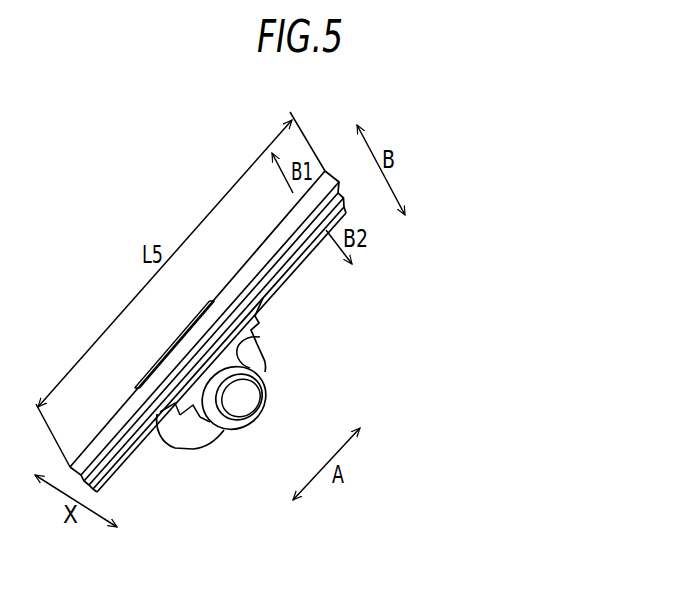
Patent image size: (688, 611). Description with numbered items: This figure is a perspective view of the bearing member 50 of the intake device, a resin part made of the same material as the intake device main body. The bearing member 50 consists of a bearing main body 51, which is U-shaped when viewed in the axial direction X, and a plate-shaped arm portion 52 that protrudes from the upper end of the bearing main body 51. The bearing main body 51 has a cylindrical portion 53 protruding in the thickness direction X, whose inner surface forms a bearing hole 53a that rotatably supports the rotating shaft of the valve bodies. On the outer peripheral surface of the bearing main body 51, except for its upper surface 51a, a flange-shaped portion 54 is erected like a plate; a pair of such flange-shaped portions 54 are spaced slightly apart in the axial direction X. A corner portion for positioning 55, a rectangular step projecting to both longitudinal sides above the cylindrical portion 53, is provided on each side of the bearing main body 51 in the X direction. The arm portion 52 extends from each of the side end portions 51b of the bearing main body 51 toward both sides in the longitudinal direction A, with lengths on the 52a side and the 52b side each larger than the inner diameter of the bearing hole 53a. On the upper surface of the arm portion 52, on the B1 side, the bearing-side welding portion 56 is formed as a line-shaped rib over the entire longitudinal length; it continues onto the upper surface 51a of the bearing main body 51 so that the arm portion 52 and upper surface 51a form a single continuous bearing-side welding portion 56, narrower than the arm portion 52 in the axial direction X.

The bearing member 50 is at (337, 157).
The bearing main body 51 is at (229, 450).
The upper surface 51a is at (208, 358).
The side end portions 51b is at (252, 300).
The arm portion 52 is at (263, 440).
The arm portion first side 52a is at (295, 282).
The arm portion second side 52b is at (127, 490).
The cylindrical portion 53 is at (262, 404).
The bearing hole 53a is at (238, 408).
The flange-shaped portion 54 is at (160, 437).
The corner portion for positioning 55 is at (243, 347).
The bearing-side welding portion 56 is at (182, 342).